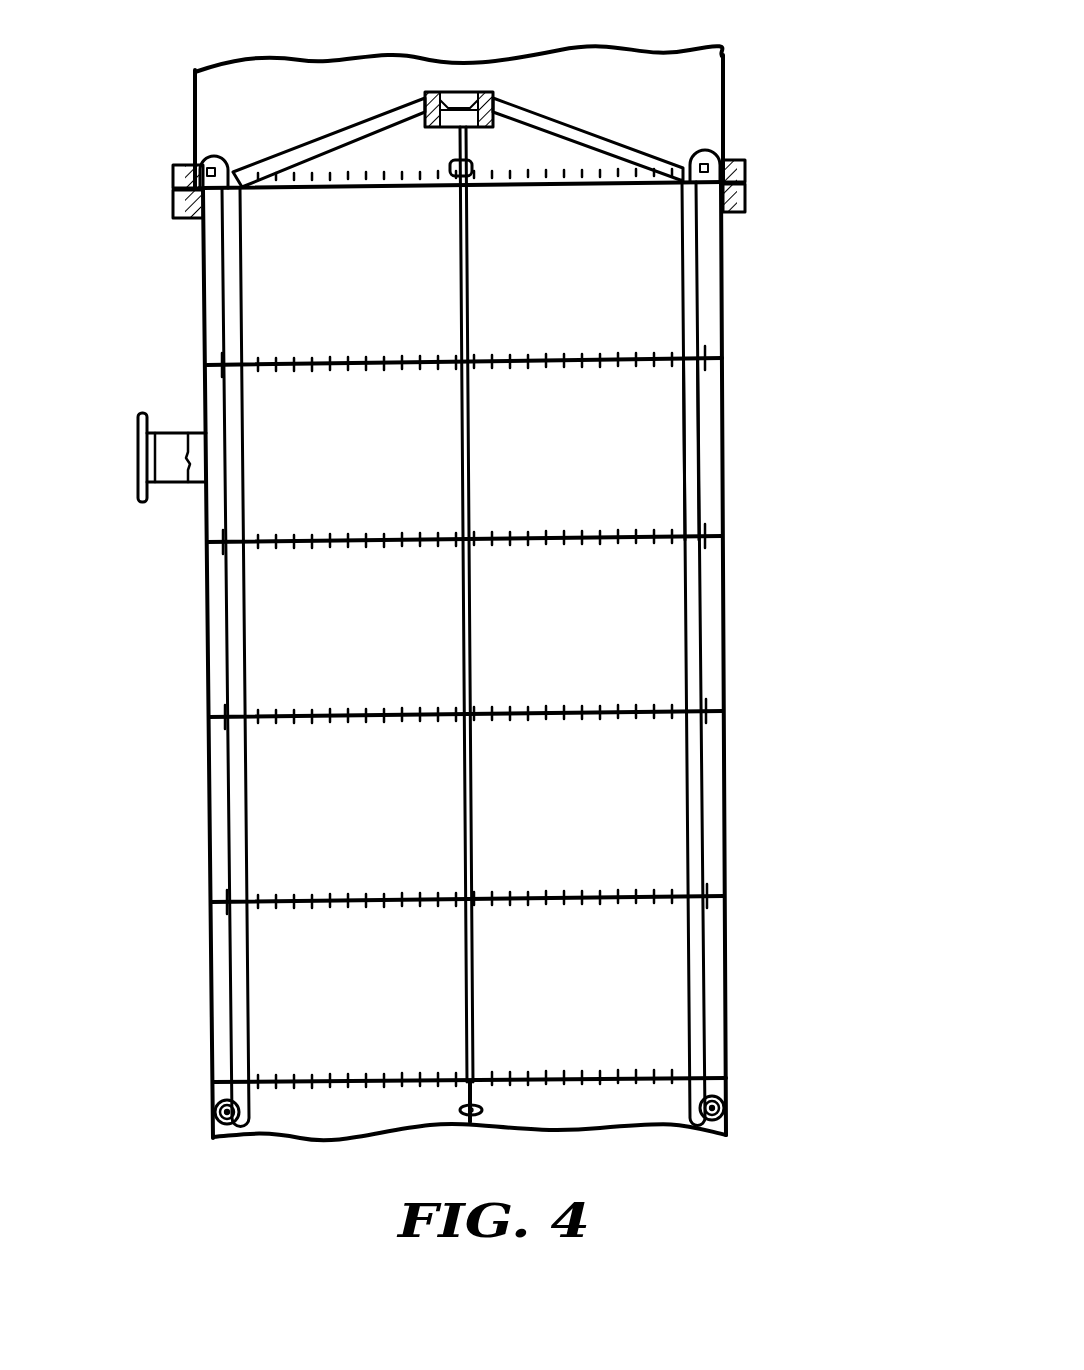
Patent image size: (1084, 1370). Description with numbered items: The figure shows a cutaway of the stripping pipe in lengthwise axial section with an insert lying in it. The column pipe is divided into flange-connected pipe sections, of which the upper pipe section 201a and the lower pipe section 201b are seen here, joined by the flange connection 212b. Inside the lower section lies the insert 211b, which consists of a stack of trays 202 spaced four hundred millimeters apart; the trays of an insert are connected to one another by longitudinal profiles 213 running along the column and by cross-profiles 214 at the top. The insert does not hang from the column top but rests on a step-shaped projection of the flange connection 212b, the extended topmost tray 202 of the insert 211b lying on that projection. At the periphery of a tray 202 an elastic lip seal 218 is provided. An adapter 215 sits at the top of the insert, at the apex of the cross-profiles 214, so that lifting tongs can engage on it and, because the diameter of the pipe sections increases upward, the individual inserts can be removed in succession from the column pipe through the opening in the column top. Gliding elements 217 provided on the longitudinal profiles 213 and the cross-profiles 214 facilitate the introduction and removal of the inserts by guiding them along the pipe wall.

The pipe section 201a is at (727, 105).
The pipe section 201b is at (727, 468).
The tray 202 is at (322, 195).
The insert 211b is at (661, 421).
The flange connection 212b is at (763, 181).
The longitudinal profile 213 is at (237, 812).
The cross-profile 214 is at (322, 137).
The adapter 215 is at (464, 92).
The gliding element 217 is at (205, 170).
The elastic lip seal 218 is at (218, 543).